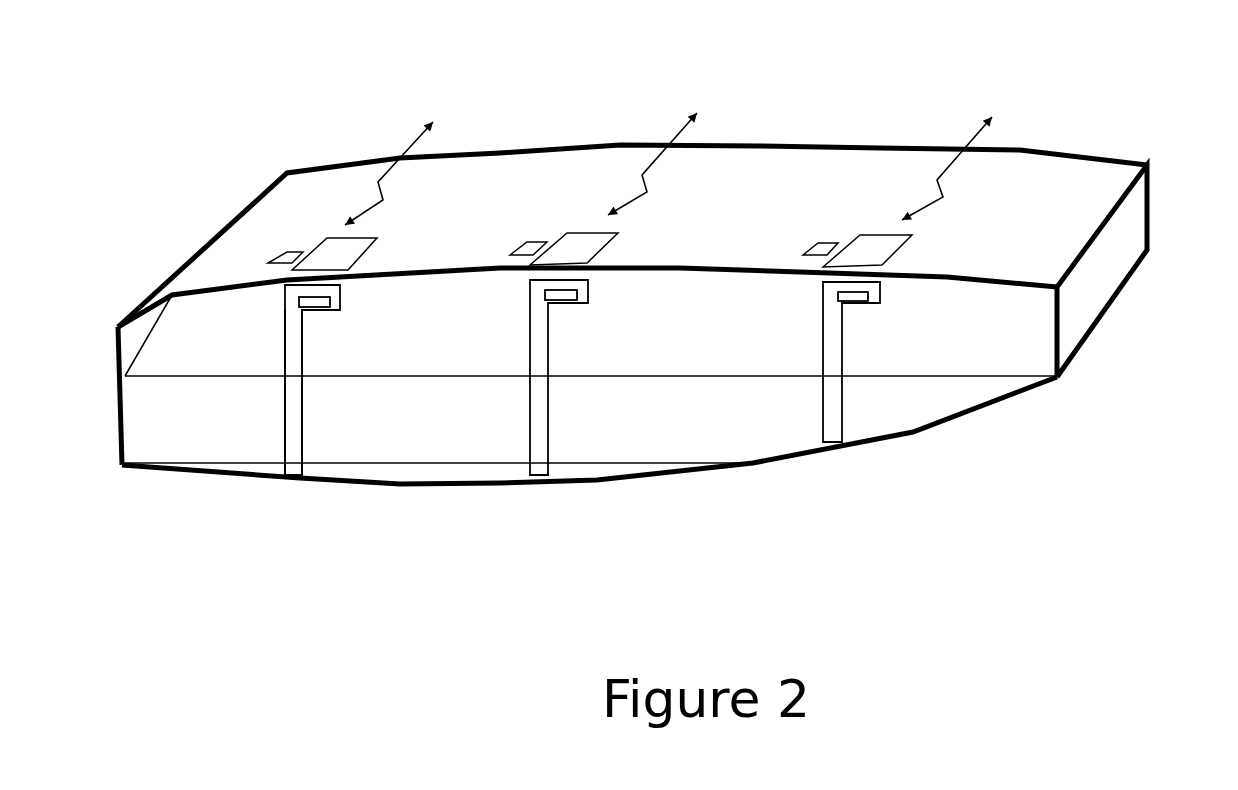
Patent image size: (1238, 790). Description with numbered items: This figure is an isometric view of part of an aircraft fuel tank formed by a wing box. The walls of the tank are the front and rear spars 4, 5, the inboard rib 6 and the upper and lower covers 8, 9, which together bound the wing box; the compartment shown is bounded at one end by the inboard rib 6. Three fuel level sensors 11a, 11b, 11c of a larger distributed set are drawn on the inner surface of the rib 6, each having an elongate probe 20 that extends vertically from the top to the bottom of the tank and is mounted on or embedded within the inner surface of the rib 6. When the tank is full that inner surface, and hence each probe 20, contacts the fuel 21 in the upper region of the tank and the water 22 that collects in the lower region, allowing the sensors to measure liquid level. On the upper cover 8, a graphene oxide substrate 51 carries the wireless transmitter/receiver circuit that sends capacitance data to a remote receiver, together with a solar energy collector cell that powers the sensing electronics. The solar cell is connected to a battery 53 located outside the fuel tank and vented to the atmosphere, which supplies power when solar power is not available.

The front spar 4 is at (137, 340).
The rear spar 5 is at (1083, 292).
The inboard rib 6 is at (478, 355).
The upper cover 8 is at (812, 168).
The lower cover 9 is at (690, 473).
The fuel level sensor 11a is at (300, 505).
The fuel level sensor 11b is at (560, 503).
The fuel level sensor 11c is at (850, 470).
The elongate probe 20 is at (297, 398).
The fuel 21 is at (413, 376).
The water 22 is at (622, 460).
The graphene oxide substrate 51 is at (342, 255).
The battery 53 is at (285, 253).